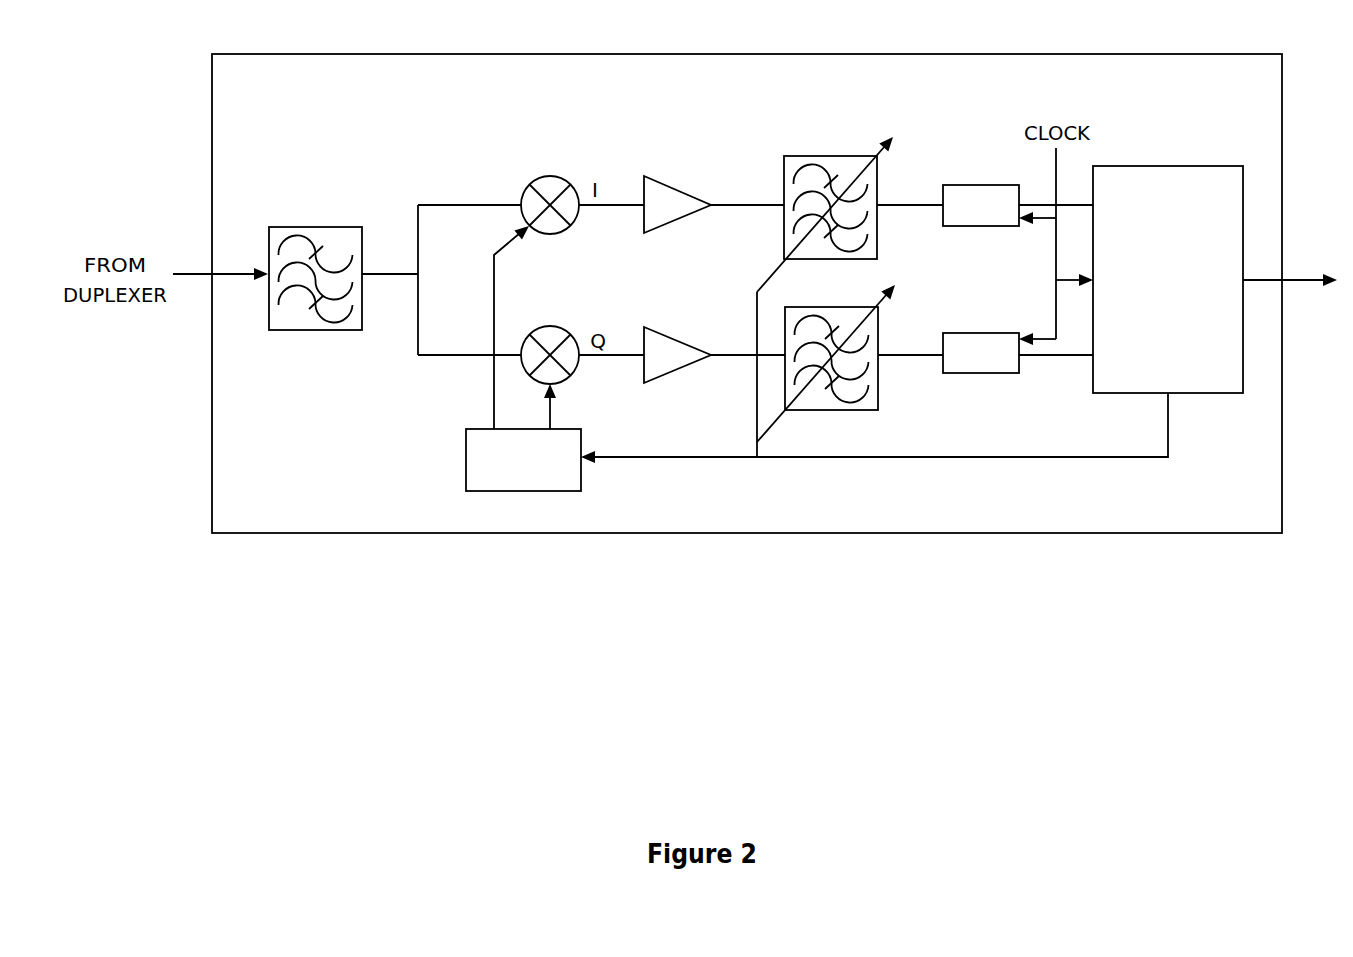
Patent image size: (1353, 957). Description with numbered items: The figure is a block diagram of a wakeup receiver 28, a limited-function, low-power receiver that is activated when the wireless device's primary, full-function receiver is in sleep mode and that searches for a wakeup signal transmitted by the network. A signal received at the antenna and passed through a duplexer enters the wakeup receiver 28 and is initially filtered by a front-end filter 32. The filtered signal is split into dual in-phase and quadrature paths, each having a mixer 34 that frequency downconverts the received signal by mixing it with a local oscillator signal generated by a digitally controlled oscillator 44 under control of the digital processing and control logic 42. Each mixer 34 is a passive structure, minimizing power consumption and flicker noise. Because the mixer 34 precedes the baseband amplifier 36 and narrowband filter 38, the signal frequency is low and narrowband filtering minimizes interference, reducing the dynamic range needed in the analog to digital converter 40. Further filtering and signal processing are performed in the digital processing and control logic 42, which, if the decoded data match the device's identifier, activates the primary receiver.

The wakeup receiver 28 is at (370, 146).
The front-end filter 32 is at (318, 226).
The mixer 34 is at (549, 176).
The amplifier 36 is at (667, 180).
The narrowband filter 38 is at (822, 155).
The analog to digital converter 40 is at (990, 184).
The digital processing and control logic 42 is at (1158, 336).
The digitally controlled oscillator 44 is at (466, 462).